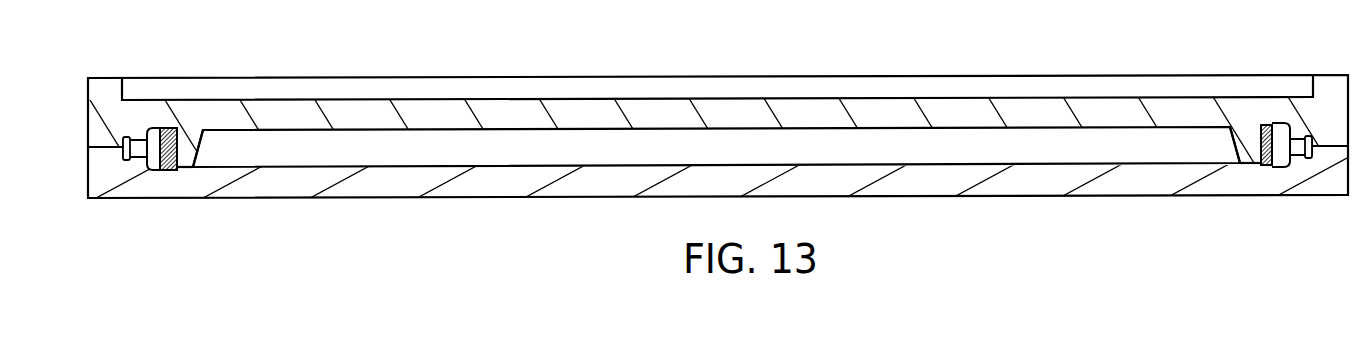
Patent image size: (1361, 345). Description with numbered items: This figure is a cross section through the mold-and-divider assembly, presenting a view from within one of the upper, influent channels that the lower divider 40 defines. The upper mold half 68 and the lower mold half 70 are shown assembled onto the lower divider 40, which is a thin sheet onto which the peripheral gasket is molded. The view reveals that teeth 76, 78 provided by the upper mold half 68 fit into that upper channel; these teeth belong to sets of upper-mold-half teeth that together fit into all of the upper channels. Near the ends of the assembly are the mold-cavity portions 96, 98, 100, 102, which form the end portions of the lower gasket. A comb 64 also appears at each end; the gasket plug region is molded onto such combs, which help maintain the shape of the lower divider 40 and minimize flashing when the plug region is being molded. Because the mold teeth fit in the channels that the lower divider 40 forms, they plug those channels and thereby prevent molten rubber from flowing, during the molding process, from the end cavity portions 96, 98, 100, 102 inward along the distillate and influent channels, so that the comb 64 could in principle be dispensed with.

The lower divider 40 is at (926, 157).
The comb 64 is at (172, 170).
The upper mold half 68 is at (88, 83).
The lower mold half 70 is at (88, 183).
The tooth 76 is at (200, 140).
The tooth 78 is at (1228, 164).
The mold-cavity portion 96 is at (152, 128).
The mold-cavity portion 98 is at (147, 167).
The mold-cavity portion 100 is at (1283, 123).
The mold-cavity portion 102 is at (1280, 167).